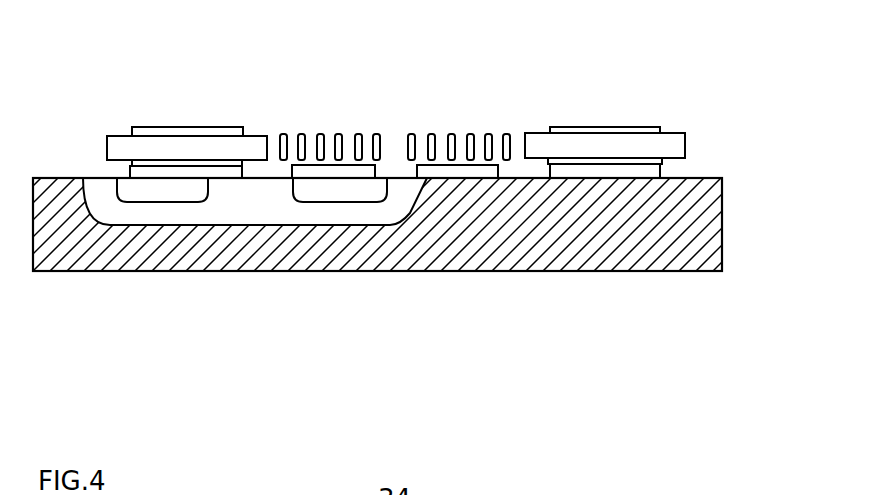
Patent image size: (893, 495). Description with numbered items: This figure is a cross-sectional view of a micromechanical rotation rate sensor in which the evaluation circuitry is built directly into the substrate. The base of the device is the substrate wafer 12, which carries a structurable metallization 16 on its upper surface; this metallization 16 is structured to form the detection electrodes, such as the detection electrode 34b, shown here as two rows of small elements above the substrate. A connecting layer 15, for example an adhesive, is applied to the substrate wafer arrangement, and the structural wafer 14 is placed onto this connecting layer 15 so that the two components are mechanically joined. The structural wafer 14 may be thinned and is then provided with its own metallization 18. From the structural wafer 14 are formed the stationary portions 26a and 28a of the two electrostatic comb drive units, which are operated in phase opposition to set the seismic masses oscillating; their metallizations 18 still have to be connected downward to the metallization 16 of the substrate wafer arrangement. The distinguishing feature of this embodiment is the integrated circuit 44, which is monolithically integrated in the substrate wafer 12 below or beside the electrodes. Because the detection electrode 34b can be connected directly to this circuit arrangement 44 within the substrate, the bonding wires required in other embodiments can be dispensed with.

The substrate wafer 12 is at (695, 242).
The structural wafer 14 is at (687, 143).
The connecting layer 15 is at (660, 163).
The metallization 16 is at (642, 173).
The metallization 18 is at (648, 117).
The stationary portion 26a is at (188, 128).
The stationary portion 28a is at (663, 127).
The detection electrode 34b is at (328, 165).
The integrated circuit 44 is at (162, 202).